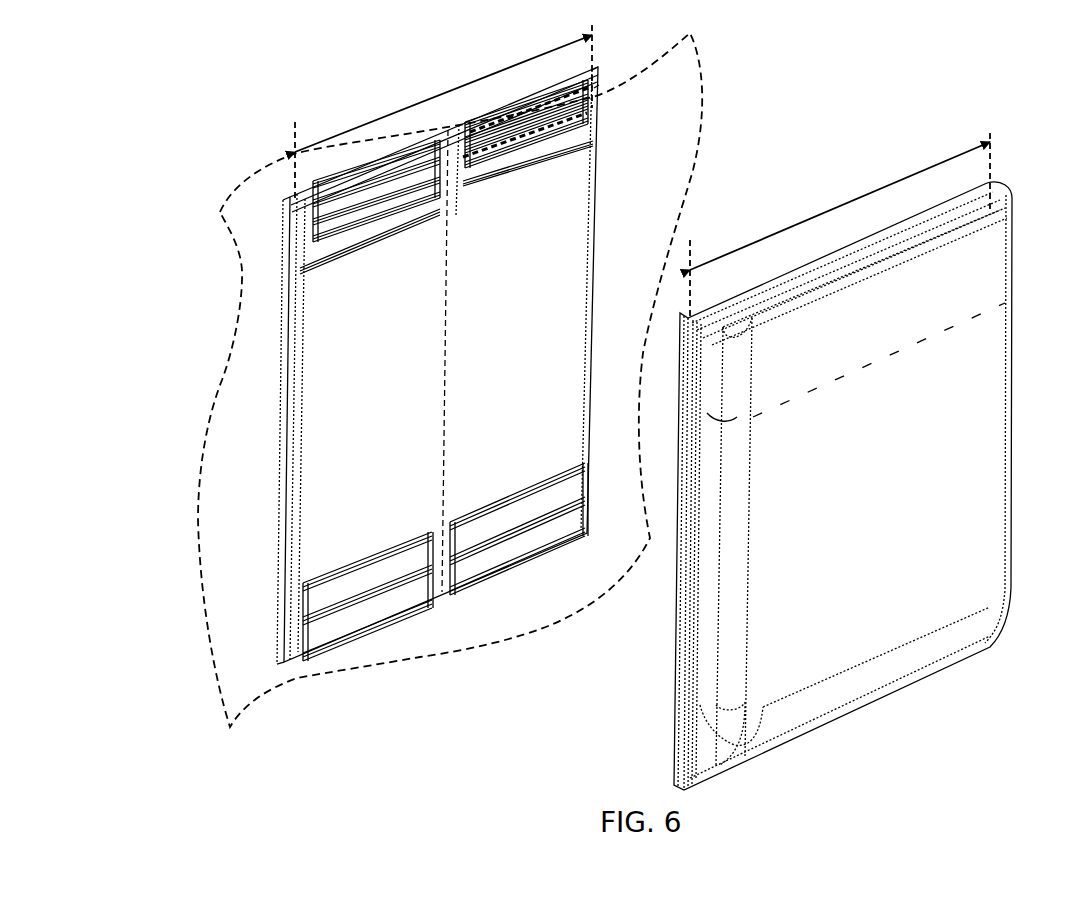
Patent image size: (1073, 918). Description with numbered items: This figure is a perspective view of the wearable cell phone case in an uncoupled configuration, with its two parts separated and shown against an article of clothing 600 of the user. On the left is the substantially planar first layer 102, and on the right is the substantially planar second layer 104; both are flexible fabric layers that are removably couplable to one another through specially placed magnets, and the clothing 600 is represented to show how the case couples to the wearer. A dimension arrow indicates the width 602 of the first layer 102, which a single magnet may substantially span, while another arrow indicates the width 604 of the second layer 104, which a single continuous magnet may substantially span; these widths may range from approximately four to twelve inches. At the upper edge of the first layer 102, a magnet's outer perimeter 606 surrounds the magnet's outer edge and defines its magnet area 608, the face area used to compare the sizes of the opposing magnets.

The article of clothing 600 is at (243, 400).
The first layer 102 is at (323, 462).
The second layer 104 is at (733, 640).
The width of the first layer 602 is at (327, 138).
The width of the second layer 604 is at (917, 167).
The perimeter 606 is at (565, 120).
The magnet area 608 is at (594, 97).